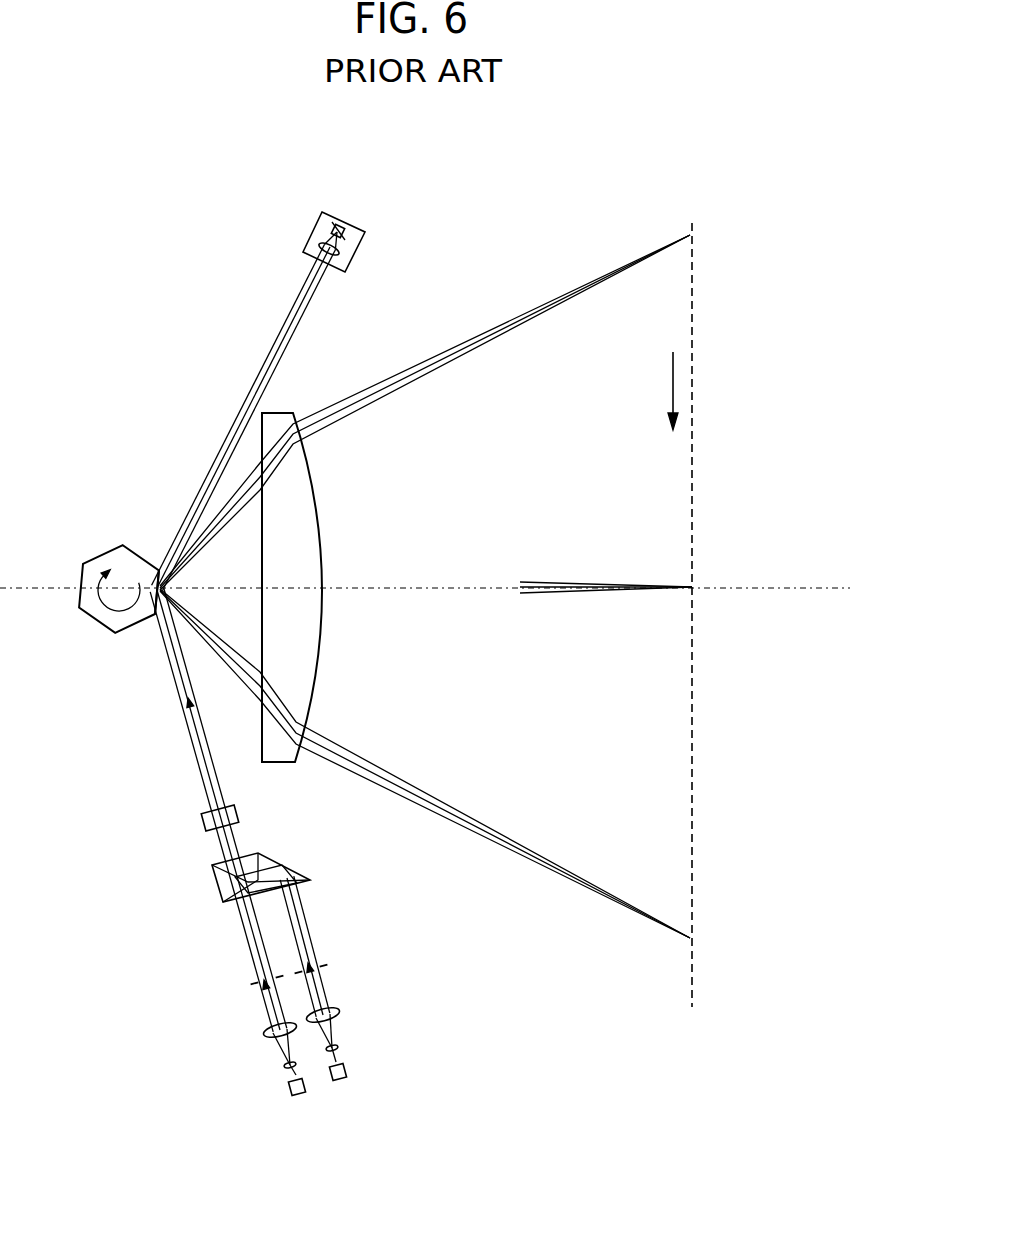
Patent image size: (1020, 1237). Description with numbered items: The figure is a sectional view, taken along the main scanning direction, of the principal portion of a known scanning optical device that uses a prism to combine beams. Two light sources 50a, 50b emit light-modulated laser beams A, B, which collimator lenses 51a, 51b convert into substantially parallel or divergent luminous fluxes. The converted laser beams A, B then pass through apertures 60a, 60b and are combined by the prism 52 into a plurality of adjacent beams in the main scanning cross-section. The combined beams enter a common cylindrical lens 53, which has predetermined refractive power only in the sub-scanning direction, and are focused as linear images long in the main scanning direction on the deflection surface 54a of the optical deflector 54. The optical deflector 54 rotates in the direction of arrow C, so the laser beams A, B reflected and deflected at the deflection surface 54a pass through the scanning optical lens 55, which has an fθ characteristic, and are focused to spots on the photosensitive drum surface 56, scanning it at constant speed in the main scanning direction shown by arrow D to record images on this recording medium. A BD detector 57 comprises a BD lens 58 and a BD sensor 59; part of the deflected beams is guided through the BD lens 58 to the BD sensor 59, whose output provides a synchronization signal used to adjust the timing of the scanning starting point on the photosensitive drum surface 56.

The light source 50a is at (289, 1093).
The light source 50b is at (350, 1074).
The collimator lens 51a is at (264, 1034).
The collimator lens 51b is at (340, 1010).
The prism 52 is at (212, 880).
The cylindrical lens 53 is at (204, 818).
The optical deflector 54 is at (96, 557).
The deflection surface 54a is at (151, 568).
The scanning optical lens 55 is at (286, 413).
The photosensitive drum surface 56 is at (694, 452).
The BD detector 57 is at (356, 229).
The BD lens 58 is at (320, 245).
The BD sensor 59 is at (338, 226).
The aperture 60a is at (250, 984).
The aperture 60b is at (328, 966).
The laser beam A is at (283, 1065).
The laser beam B is at (343, 1049).
The rotation direction arrow C is at (103, 612).
The scanning direction arrow D is at (671, 385).